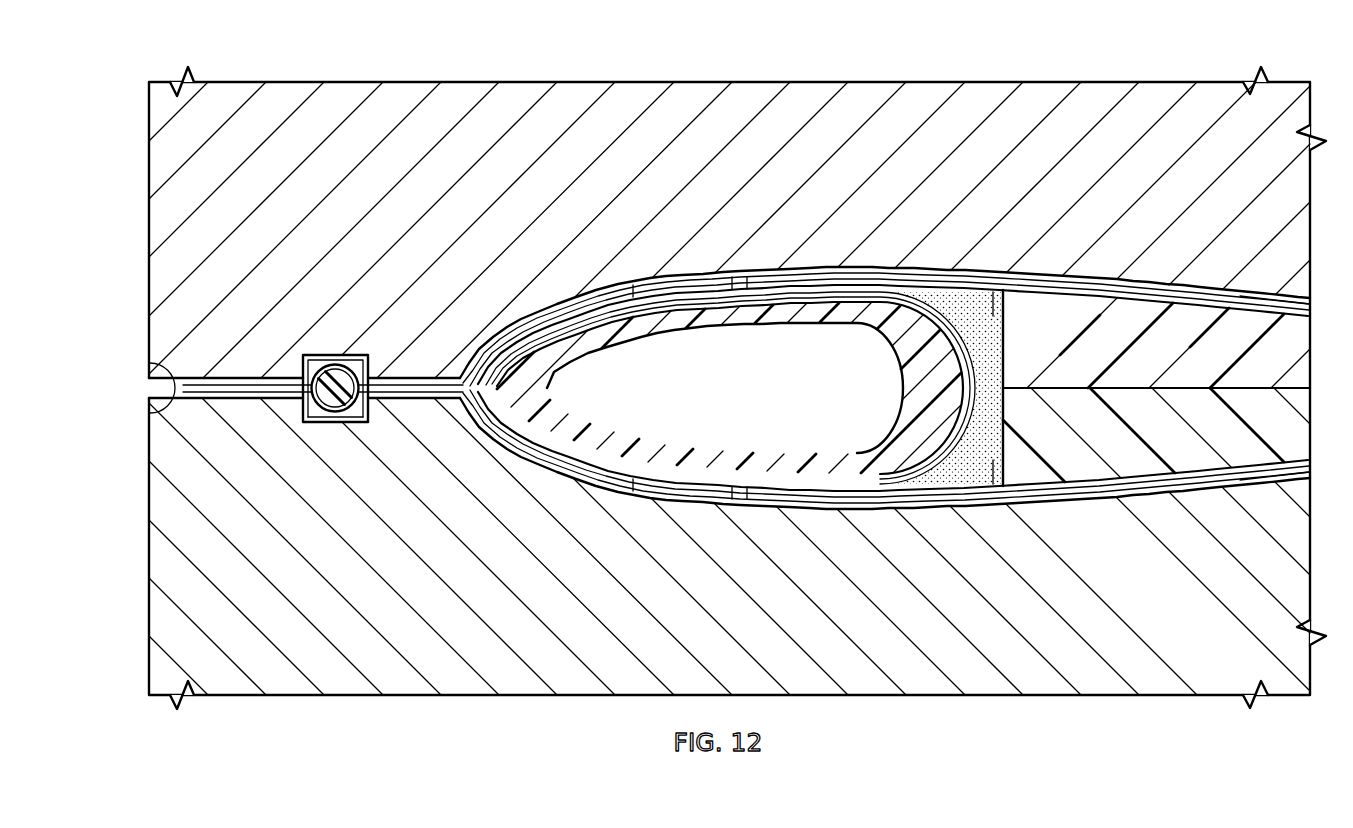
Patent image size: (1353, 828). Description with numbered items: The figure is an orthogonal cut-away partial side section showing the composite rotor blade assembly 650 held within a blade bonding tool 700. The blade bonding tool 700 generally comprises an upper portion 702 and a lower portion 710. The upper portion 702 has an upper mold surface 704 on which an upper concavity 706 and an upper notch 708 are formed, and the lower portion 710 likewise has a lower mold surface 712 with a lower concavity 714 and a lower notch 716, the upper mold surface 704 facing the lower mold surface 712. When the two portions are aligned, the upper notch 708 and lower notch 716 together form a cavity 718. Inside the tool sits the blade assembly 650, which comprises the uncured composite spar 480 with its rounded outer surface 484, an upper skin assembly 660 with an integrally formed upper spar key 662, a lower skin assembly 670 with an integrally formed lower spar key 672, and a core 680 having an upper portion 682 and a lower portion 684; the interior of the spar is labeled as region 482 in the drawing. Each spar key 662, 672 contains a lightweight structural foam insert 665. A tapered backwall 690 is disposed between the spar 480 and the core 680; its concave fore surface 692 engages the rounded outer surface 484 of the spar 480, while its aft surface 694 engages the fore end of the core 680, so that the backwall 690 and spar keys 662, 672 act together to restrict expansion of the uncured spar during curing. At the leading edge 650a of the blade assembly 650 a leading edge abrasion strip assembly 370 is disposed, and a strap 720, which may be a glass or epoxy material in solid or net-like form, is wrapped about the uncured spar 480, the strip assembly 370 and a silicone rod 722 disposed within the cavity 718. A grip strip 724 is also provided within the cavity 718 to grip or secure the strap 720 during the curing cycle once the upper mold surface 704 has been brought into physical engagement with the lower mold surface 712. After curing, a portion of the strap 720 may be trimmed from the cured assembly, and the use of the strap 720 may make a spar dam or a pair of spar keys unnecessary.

The blade bonding tool 700 is at (518, 68).
The upper portion 702 is at (698, 170).
The upper mold surface 704 is at (152, 398).
The upper concavity 706 is at (656, 280).
The upper notch 708 is at (380, 364).
The lower portion 710 is at (698, 630).
The lower mold surface 712 is at (150, 376).
The lower concavity 714 is at (661, 498).
The lower notch 716 is at (300, 412).
The cavity 718 is at (300, 366).
The strap 720 is at (560, 306).
The silicone rod 722 is at (338, 368).
The grip strip 724 is at (356, 424).
The composite blade assembly 650 is at (1170, 262).
The leading edge 650a is at (464, 402).
The abrasion strip assembly 370 is at (598, 478).
The rounded outer surface 484 is at (800, 278).
The upper spar key 662 is at (978, 285).
The insert 665 is at (1008, 292).
The uncured composite spar 480 is at (778, 324).
The inner chamber 482 is at (775, 452).
The concave fore surface 692 is at (958, 388).
The lower spar key 672 is at (977, 484).
The tapered backwall 690 is at (1008, 356).
The aft surface 694 is at (1008, 404).
The lower portion 684 is at (1168, 358).
The upper portion 682 is at (1168, 443).
The core 680 is at (1145, 296).
The lower skin assembly 670 is at (1253, 293).
The upper skin assembly 660 is at (1258, 482).